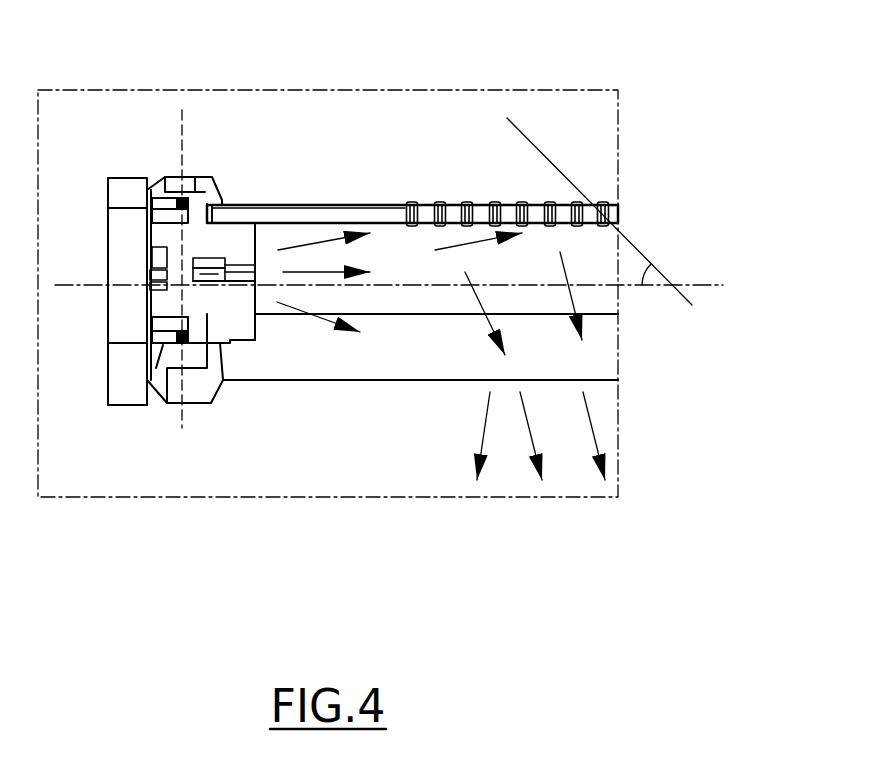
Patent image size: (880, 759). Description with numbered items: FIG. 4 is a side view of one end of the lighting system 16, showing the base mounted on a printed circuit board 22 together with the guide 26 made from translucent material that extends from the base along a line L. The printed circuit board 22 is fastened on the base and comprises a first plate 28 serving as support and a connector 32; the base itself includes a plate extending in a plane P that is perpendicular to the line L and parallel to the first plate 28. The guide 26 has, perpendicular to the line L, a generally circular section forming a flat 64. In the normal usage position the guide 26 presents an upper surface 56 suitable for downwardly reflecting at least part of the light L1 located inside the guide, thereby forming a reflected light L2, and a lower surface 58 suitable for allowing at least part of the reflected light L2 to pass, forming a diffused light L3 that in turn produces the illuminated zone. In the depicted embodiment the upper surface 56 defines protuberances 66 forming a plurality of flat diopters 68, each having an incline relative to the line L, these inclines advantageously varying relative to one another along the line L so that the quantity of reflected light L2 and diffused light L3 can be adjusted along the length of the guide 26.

The lighting system 16 is at (467, 138).
The printed circuit board 22 is at (125, 328).
The guide 26 is at (435, 348).
The first plate 28 is at (130, 257).
The connector 32 is at (197, 330).
The upper surface 56 is at (373, 205).
The lower surface 58 is at (367, 382).
The flat 64 is at (297, 212).
The protuberances 66 is at (437, 195).
The flat diopters 68 is at (500, 203).
The plane P is at (182, 157).
The line L is at (700, 283).
The light L1 is at (308, 248).
The reflected light L2 is at (500, 322).
The diffused light L3 is at (590, 423).